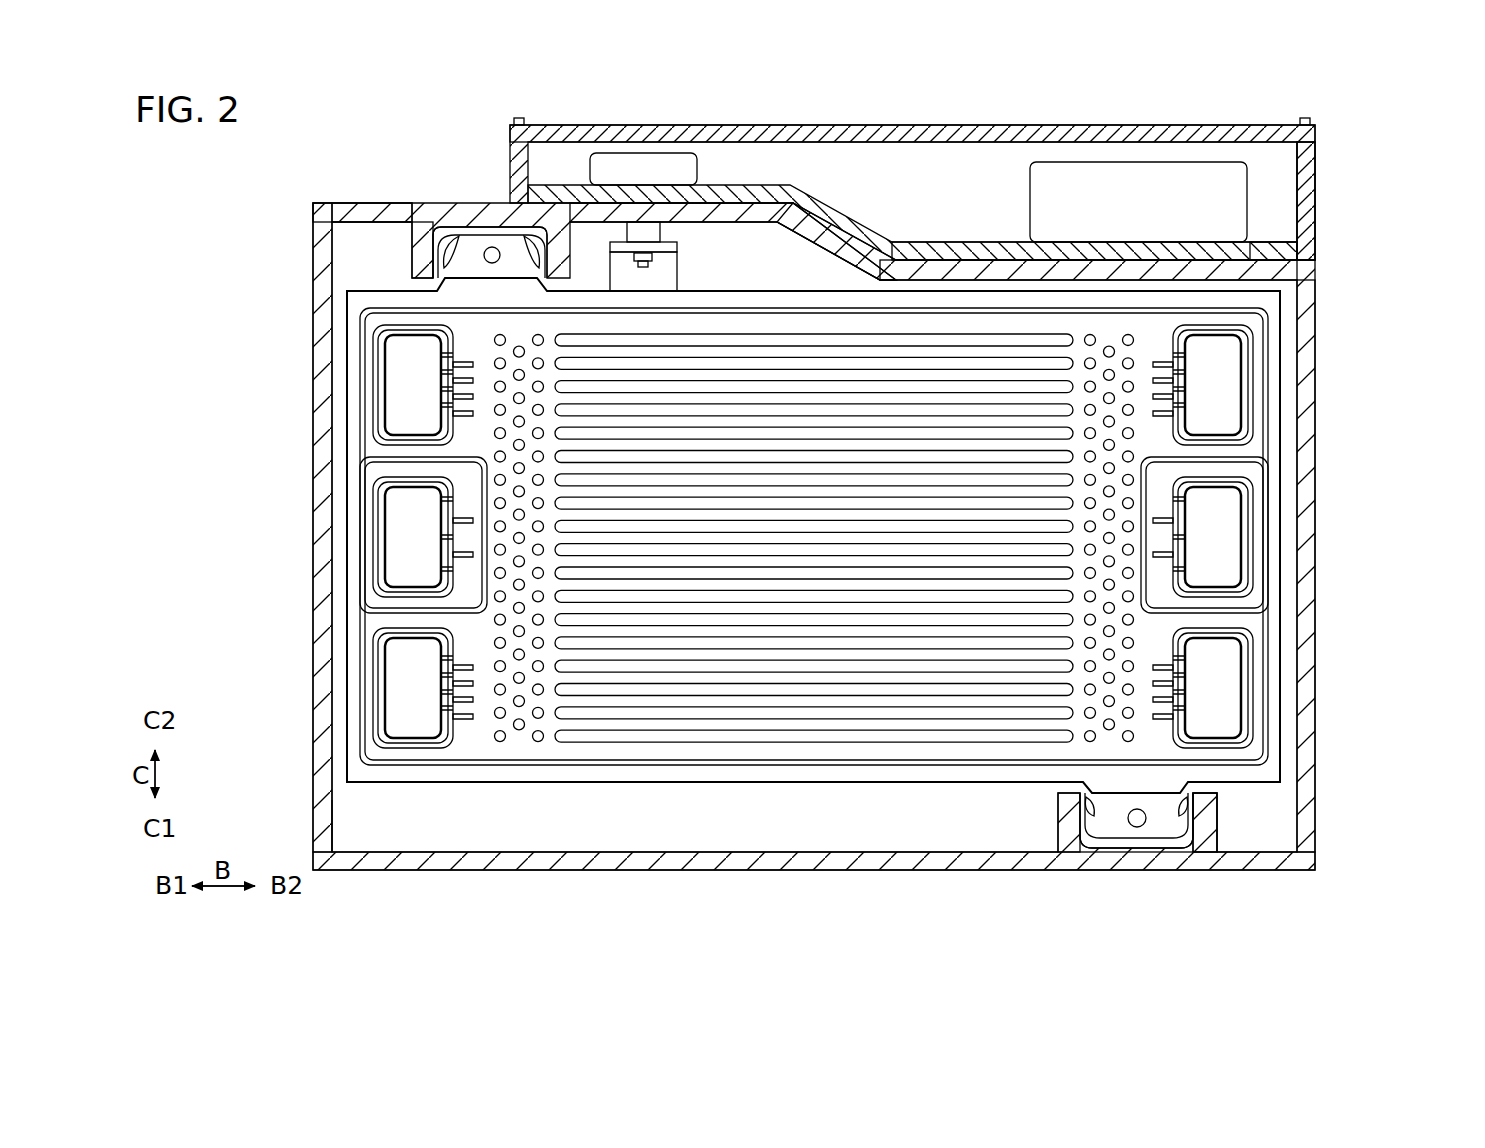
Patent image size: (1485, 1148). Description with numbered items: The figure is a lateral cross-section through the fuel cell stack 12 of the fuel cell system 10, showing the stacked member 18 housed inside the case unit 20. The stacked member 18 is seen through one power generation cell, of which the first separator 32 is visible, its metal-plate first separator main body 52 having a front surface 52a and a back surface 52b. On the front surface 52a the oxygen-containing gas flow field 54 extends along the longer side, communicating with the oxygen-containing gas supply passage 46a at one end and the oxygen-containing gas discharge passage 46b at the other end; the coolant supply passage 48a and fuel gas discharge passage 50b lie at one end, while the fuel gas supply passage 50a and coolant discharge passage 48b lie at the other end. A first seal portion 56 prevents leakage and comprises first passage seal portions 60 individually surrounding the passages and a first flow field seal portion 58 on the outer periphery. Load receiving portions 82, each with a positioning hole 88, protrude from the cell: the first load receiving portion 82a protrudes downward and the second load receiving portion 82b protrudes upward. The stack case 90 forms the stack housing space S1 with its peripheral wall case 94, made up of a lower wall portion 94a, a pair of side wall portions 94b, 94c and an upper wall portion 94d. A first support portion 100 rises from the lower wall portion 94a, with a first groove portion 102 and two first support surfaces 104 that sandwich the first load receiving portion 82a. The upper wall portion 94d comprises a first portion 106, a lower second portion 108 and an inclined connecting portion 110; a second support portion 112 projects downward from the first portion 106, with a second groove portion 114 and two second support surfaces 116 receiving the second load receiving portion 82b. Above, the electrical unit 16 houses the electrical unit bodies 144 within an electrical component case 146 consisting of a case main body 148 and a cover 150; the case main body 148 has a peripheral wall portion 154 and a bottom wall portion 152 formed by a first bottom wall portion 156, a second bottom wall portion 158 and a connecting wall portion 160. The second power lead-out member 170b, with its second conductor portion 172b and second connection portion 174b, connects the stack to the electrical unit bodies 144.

The battery module 10 is at (291, 112).
The fuel cell stack 12 is at (1334, 407).
The electrical unit 16 is at (1124, 119).
The stacked member 18 is at (931, 797).
The case unit 20 is at (819, 515).
The first separator 32 is at (1286, 387).
The oxygen-containing gas supply passage 46a is at (400, 358).
The oxygen-containing gas discharge passage 46b is at (1228, 697).
The coolant supply passage 48a is at (400, 538).
The coolant discharge passage 48b is at (1228, 554).
The fuel gas supply passage 50a is at (1228, 352).
The fuel gas discharge passage 50b is at (400, 668).
The first separator main body 52 is at (845, 773).
The front surface 52a is at (620, 773).
The back surface 52b is at (680, 773).
The oxygen-containing gas flow field 54 is at (768, 716).
The first seal portion 56 is at (475, 771).
The first flow field seal portion 58 is at (533, 773).
The first passage seal portions 60 is at (375, 411).
The load receiving portions 82 is at (778, 500).
The first load receiving portion 82a is at (1113, 840).
The second load receiving portion 82b is at (487, 233).
The positioning hole 88 is at (493, 246).
The stack case 90 is at (316, 204).
The peripheral wall case 94 is at (520, 871).
The lower wall portion 94a is at (607, 868).
The side wall portion 94b is at (318, 492).
The side wall portion 94c is at (1310, 603).
The upper wall portion 94d is at (340, 205).
The first support portion 100 is at (1210, 808).
The first groove portion 102 is at (1188, 845).
The first support surfaces 104 is at (1088, 806).
The first portion 106 is at (380, 212).
The second portion 108 is at (975, 270).
The connecting portion 110 is at (838, 240).
The second support portion 112 is at (420, 258).
The second groove portion 114 is at (437, 245).
The second support surfaces 116 is at (462, 250).
The electrical unit bodies 144 is at (680, 170).
The electrical component case 146 is at (1270, 121).
The case main body 148 is at (1320, 163).
The cover 150 is at (1225, 132).
The bottom wall portion 152 is at (943, 245).
The peripheral wall portion 154 is at (1310, 197).
The first bottom wall portion 156 is at (752, 192).
The second bottom wall portion 158 is at (1260, 247).
The wall portion 160 is at (862, 233).
The second power lead-out member 170b is at (698, 264).
The second conductor portion 172b is at (683, 248).
The second connection portion 174b is at (639, 225).
The stack housing space S1 is at (353, 808).